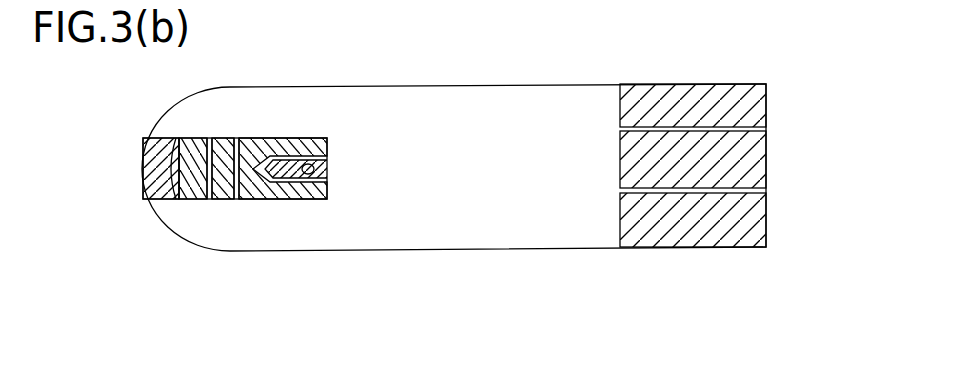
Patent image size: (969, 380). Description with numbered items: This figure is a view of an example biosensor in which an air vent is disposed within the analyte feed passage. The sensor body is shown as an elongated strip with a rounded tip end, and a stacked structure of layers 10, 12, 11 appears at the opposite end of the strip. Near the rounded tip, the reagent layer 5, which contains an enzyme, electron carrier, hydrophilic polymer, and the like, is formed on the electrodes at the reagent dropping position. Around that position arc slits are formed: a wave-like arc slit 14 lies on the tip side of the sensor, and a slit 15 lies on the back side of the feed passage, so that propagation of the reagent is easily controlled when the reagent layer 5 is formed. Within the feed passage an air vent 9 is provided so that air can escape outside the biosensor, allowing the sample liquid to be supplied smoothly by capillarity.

The reagent layer 5 is at (223, 138).
The air vent 9 is at (303, 175).
The first member 10 is at (750, 109).
The second member 11 is at (750, 233).
The intermediate layer 12 is at (750, 168).
The wave-like arc slit 14 is at (145, 185).
The slit 15 is at (268, 187).